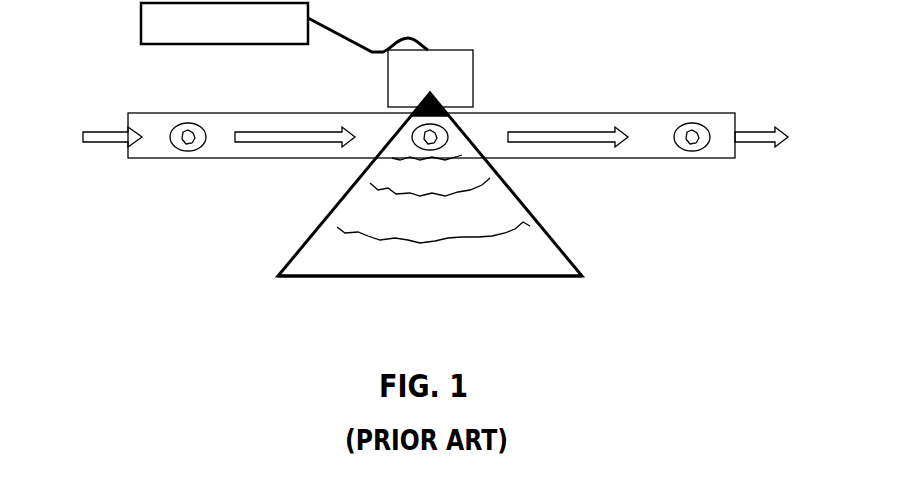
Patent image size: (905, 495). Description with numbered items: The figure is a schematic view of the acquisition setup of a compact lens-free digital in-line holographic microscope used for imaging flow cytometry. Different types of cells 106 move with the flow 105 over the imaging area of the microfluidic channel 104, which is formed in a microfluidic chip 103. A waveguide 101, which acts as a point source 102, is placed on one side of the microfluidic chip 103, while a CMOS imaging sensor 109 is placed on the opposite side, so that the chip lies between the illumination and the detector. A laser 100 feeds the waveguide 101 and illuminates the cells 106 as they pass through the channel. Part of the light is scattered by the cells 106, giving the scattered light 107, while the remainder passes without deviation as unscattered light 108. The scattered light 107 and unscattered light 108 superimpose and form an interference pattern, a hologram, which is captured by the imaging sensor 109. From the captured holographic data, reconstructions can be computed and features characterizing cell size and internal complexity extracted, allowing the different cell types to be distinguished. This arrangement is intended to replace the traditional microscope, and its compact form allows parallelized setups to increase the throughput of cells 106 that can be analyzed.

The laser 100 is at (284, 27).
The waveguide 101 is at (462, 89).
The point source 102 is at (427, 95).
The microfluidic chip 103 is at (171, 164).
The microfluidic channel 104 is at (618, 160).
The flow 105 is at (293, 142).
The cells 106 is at (692, 122).
The scattered light 107 is at (530, 226).
The unscattered light 108 is at (297, 258).
The CMOS imaging sensor 109 is at (465, 278).